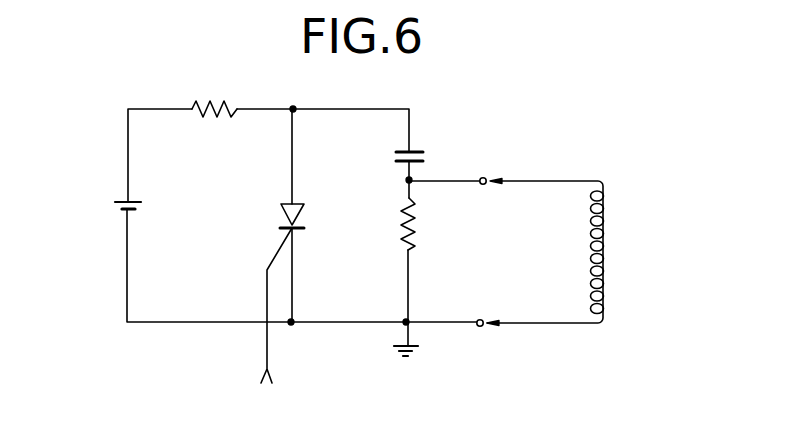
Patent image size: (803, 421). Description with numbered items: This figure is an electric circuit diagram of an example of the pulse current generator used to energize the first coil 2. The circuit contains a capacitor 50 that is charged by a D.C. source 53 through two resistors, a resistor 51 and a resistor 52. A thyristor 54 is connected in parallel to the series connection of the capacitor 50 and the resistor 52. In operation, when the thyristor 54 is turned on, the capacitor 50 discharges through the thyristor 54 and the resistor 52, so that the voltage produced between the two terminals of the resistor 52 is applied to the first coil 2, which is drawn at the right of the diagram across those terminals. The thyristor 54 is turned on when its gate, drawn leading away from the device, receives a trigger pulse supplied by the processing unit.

The first coil 2 is at (607, 225).
The capacitor 50 is at (421, 157).
The resistor 51 is at (214, 103).
The resistor 52 is at (416, 234).
The D.C. source 53 is at (143, 206).
The thyristor 54 is at (305, 214).